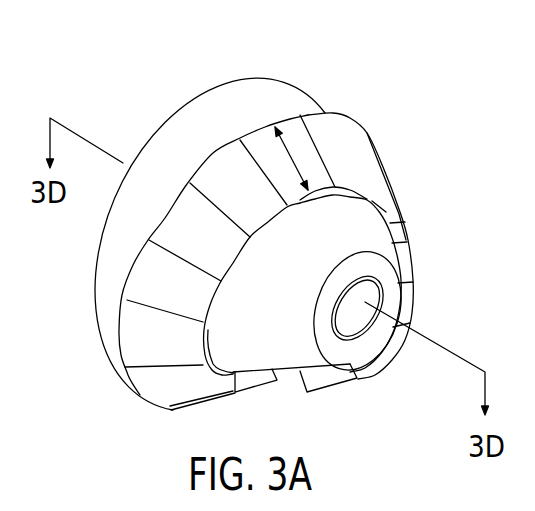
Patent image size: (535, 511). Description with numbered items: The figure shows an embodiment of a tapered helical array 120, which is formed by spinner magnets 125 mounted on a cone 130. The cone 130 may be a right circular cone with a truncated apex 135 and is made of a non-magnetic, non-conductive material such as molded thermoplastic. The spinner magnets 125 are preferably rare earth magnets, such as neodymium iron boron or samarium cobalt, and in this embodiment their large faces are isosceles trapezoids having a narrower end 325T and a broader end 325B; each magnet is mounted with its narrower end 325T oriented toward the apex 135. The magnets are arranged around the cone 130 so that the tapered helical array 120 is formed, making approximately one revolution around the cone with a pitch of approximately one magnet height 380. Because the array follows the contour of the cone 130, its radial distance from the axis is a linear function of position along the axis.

The tapered helical array 120 is at (392, 163).
The spinner magnets 125 is at (173, 223).
The cone 130 is at (265, 77).
The truncated apex 135 is at (388, 273).
The broader end 325B is at (211, 153).
The narrower end 325T is at (270, 232).
The magnet height 380 is at (332, 117).